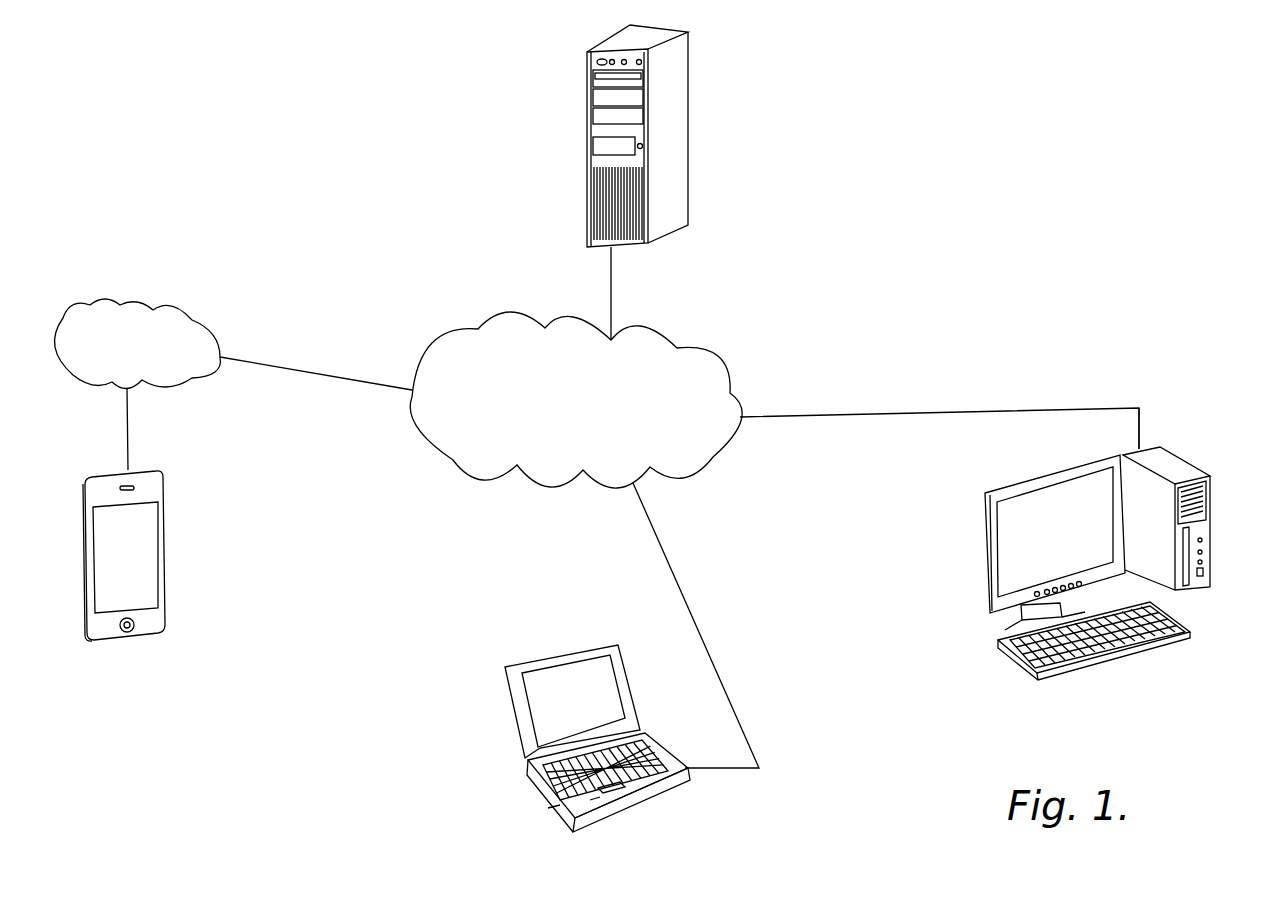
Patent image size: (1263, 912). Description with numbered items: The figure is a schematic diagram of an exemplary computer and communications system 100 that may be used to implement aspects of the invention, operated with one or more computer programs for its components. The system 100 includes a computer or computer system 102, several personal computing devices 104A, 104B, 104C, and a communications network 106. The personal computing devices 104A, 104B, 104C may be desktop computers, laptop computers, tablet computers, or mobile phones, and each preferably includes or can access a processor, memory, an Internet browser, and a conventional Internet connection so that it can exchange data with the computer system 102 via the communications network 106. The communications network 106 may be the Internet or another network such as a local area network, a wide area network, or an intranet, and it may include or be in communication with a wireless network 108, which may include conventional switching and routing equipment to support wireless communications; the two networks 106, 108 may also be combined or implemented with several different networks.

The computer and communications system 100 is at (447, 128).
The computer system 102 is at (685, 147).
The personal computing device 104A is at (677, 803).
The personal computing device 104B is at (1130, 660).
The personal computing device 104C is at (170, 525).
The communications network 106 is at (703, 362).
The wireless network 108 is at (165, 320).